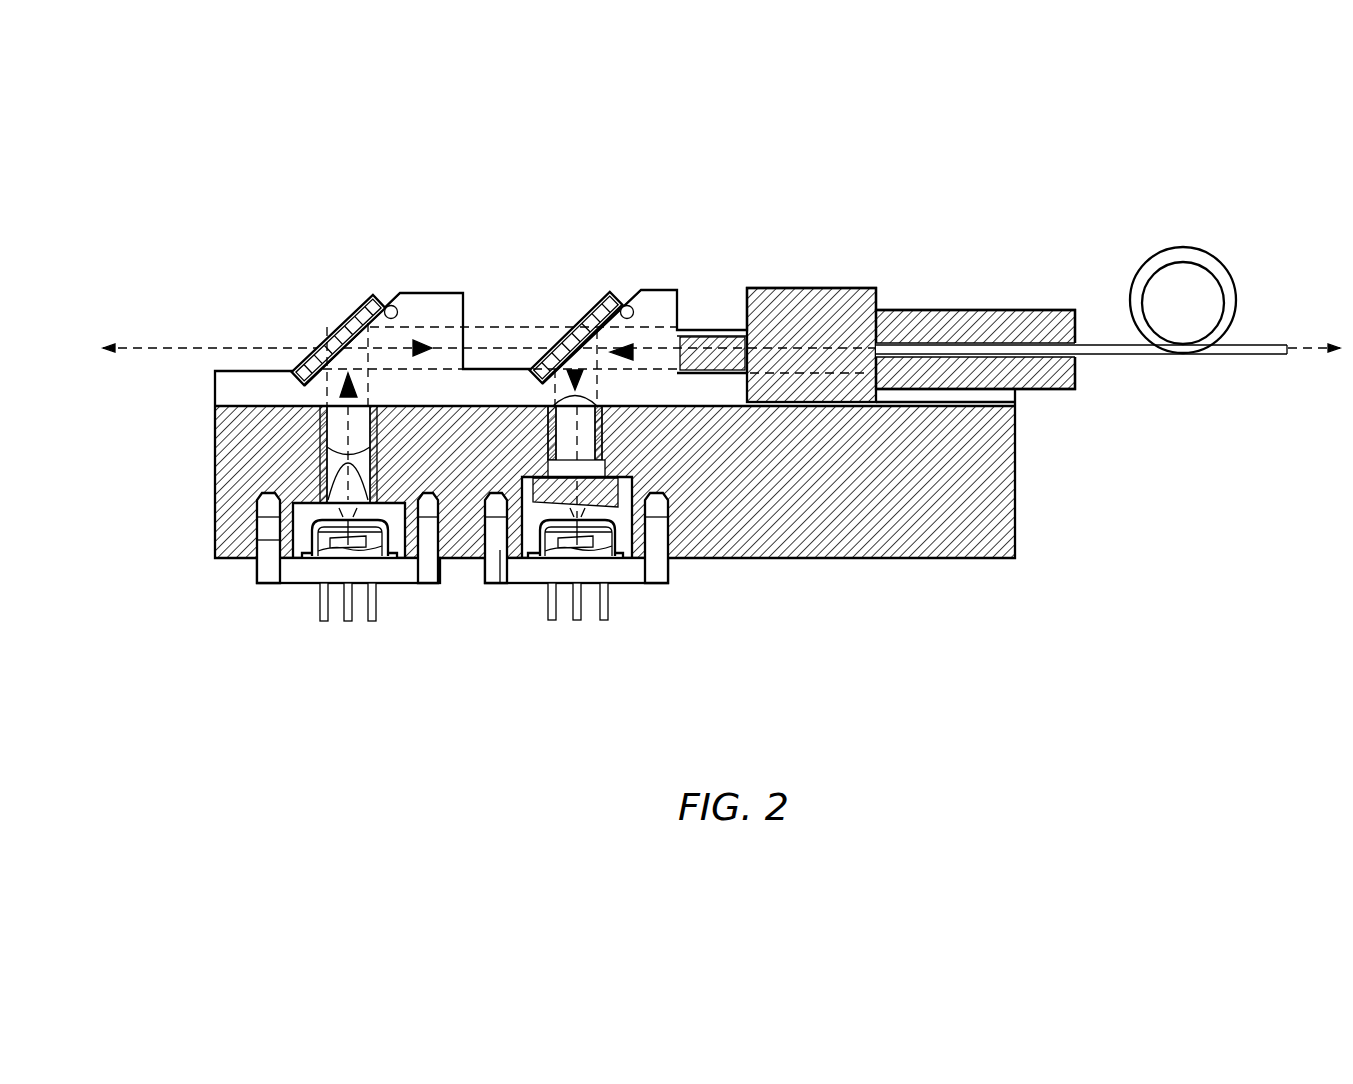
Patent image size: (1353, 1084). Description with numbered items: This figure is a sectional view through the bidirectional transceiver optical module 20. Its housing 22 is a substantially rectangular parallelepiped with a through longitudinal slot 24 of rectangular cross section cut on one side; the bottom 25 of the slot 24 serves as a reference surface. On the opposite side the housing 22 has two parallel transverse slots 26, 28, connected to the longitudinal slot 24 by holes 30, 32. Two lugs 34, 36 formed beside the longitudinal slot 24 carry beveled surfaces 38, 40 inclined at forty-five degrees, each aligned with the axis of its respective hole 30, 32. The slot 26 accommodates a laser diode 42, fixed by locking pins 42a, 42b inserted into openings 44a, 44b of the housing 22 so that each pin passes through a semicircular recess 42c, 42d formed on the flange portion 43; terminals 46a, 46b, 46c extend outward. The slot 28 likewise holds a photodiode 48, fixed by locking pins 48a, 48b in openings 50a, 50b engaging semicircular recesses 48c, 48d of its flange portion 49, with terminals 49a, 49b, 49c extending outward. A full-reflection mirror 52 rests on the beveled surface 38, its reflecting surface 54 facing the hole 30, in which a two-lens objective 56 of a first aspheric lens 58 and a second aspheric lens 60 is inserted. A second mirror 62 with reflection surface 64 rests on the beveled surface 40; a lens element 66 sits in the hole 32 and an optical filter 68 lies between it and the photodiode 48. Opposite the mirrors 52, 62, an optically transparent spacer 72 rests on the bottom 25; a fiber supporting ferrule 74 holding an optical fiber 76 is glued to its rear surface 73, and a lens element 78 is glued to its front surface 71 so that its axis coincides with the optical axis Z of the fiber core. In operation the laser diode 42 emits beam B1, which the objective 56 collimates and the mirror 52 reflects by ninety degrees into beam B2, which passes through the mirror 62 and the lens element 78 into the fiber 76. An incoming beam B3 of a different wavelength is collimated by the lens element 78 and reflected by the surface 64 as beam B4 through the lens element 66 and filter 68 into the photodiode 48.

The optical module 20 is at (145, 655).
The housing 22 is at (210, 498).
The longitudinal slot 24 is at (498, 371).
The bottom of the slot 25 is at (228, 404).
The transverse slot 26 is at (283, 560).
The transverse slot 28 is at (510, 487).
The hole 30 is at (318, 455).
The hole 32 is at (558, 405).
The lug 34 is at (447, 293).
The lug 36 is at (658, 290).
The beveled surface 38 is at (400, 297).
The beveled surface 40 is at (632, 296).
The laser diode 42 is at (282, 586).
The locking pin 42a is at (262, 535).
The locking pin 42b is at (433, 583).
The semicircular recess 42c is at (257, 583).
The semicircular recess 42d is at (422, 583).
The flange portion 43 is at (275, 587).
The opening 44a is at (262, 510).
The opening 44b is at (440, 500).
The terminal 46a is at (323, 624).
The terminal 46b is at (350, 624).
The terminal 46c is at (373, 624).
The photodiode 48 is at (632, 583).
The locking pin 48a is at (500, 550).
The locking pin 48b is at (672, 557).
The semicircular recess 48c is at (510, 583).
The semicircular recess 48d is at (625, 583).
The flange portion 49 is at (610, 619).
The terminal 49a is at (552, 620).
The terminal 49b is at (580, 620).
The terminal 49c is at (603, 620).
The opening 50a is at (488, 500).
The opening 50b is at (661, 508).
The full-reflection mirror 52 is at (330, 320).
The reflecting surface 54 is at (389, 306).
The two-lens objective 56 is at (312, 432).
The first aspheric lens 58 is at (337, 480).
The second aspheric lens 60 is at (333, 443).
The second mirror 62 is at (577, 308).
The reflection surface 64 is at (626, 306).
The lens element 66 is at (605, 408).
The optical filter 68 is at (618, 485).
The front surface of the spacer 71 is at (743, 303).
The optically transparent spacer 72 is at (793, 288).
The rear surface of the spacer 73 is at (877, 290).
The fiber supporting ferrule 74 is at (985, 310).
The optical fiber 76 is at (1100, 357).
The lens element 78 is at (687, 330).
The first transmitting laser beam B1 is at (355, 393).
The beam B2 is at (433, 352).
The beam B3 is at (633, 355).
The beam B4 is at (583, 385).
The optical axis Z is at (720, 330).